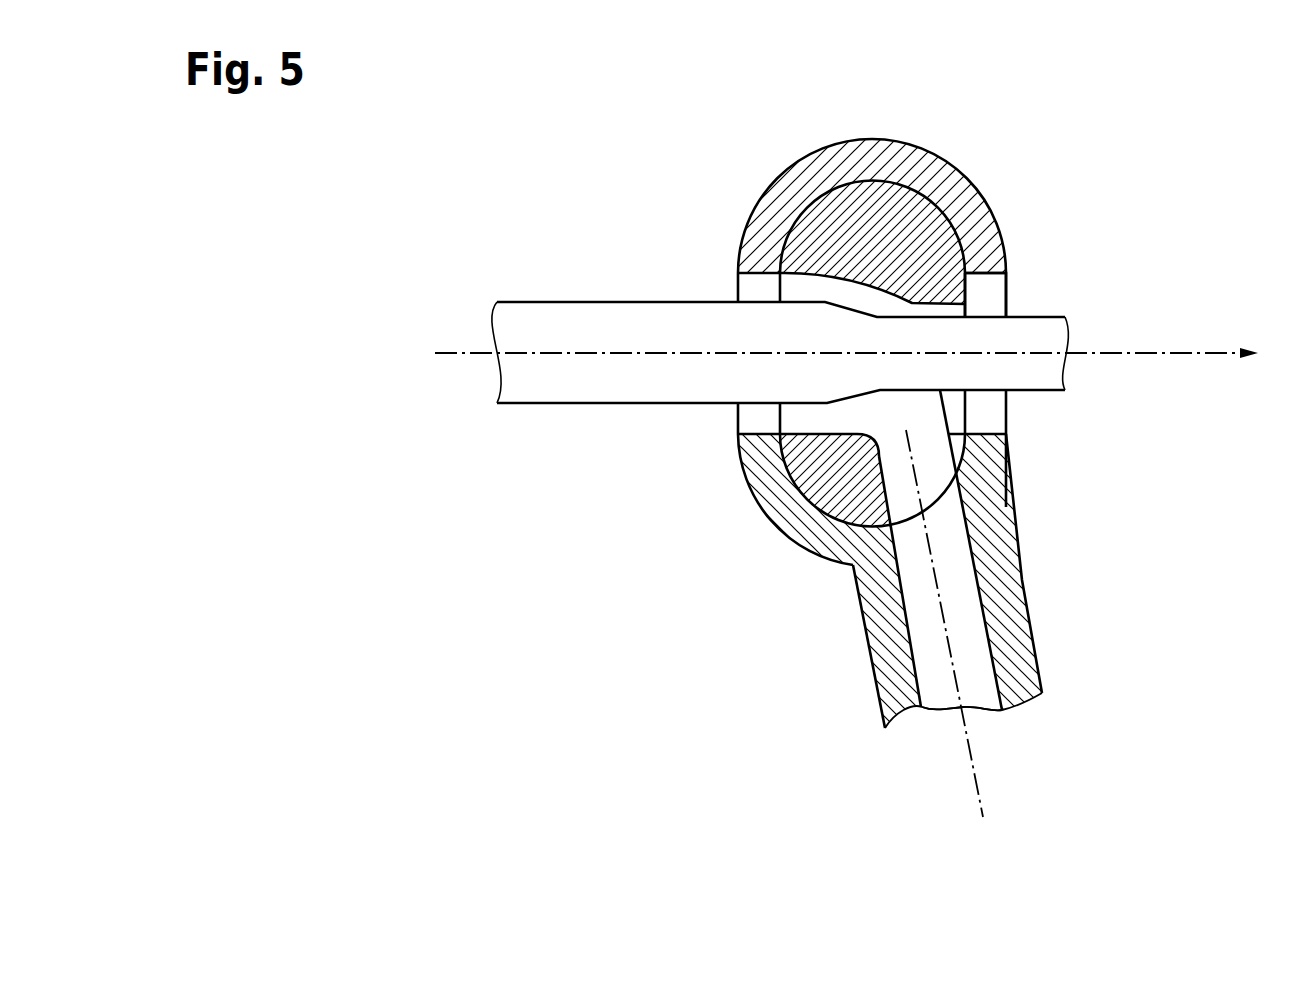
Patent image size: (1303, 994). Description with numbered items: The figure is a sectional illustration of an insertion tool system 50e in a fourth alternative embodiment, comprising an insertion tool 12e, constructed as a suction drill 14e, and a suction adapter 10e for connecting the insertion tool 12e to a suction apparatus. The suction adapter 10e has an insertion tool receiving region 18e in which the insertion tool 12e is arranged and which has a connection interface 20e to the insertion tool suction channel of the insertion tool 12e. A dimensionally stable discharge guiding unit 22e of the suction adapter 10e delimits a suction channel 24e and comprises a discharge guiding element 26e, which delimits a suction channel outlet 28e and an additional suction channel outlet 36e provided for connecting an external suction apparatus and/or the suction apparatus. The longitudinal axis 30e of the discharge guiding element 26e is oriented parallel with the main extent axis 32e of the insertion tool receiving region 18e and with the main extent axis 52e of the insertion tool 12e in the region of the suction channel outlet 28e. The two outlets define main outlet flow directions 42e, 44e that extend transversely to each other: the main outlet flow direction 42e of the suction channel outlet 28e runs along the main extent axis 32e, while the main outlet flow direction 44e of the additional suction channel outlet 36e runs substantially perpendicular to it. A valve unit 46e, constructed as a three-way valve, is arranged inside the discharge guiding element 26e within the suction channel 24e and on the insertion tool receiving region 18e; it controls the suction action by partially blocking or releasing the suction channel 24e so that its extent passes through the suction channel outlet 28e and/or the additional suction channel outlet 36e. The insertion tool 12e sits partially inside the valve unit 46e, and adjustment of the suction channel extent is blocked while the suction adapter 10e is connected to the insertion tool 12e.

The suction adapter 10e is at (856, 464).
The insertion tool 12e is at (856, 338).
The suction drill 14e is at (856, 338).
The insertion tool receiving region 18e is at (854, 299).
The connection interface 20e is at (817, 289).
The discharge guiding unit 22e is at (964, 548).
The suction channel 24e is at (955, 614).
The discharge guiding element 26e is at (1022, 668).
The suction channel outlet 28e is at (1008, 289).
The longitudinal axis 30e is at (1031, 623).
The main extent axis 32e is at (856, 409).
The additional suction channel outlet 36e is at (935, 695).
The main outlet flow direction 42e is at (856, 409).
The main outlet flow direction 44e is at (978, 760).
The valve unit 46e is at (920, 203).
The insertion tool system 50e is at (856, 464).
The main extent axis 52e is at (1187, 356).